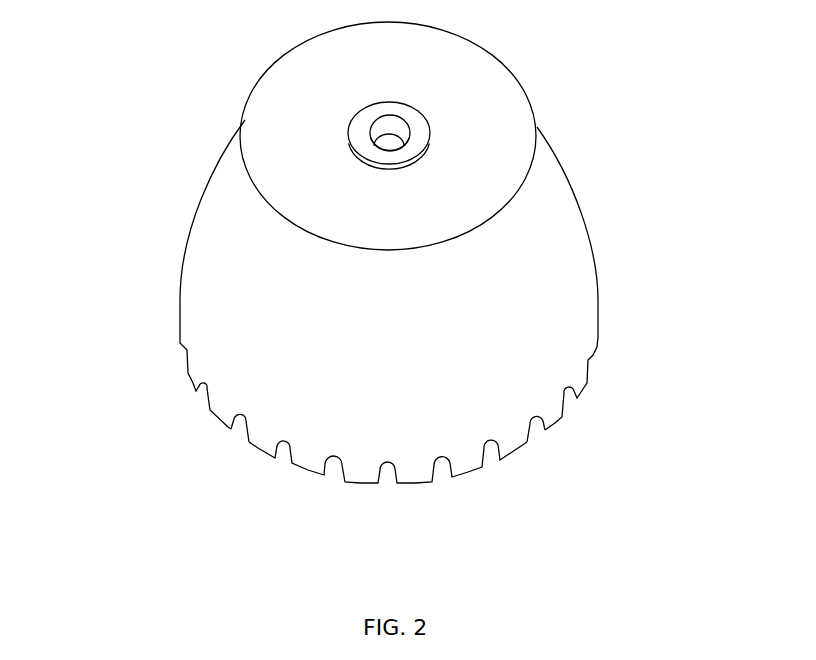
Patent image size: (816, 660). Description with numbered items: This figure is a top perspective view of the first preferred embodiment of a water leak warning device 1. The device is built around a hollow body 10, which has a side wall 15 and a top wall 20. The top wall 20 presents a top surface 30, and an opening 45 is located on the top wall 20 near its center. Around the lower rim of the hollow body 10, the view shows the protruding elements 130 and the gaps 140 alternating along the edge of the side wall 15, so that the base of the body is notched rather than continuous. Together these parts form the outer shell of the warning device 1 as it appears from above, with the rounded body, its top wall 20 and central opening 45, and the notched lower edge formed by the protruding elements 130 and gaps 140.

The water leak warning device 1 is at (215, 86).
The hollow body 10 is at (143, 229).
The side wall 15 is at (468, 325).
The top wall 20 is at (445, 152).
The top surface 30 is at (427, 87).
The opening 45 is at (380, 137).
The protruding elements 130 is at (518, 443).
The gaps 140 is at (238, 430).